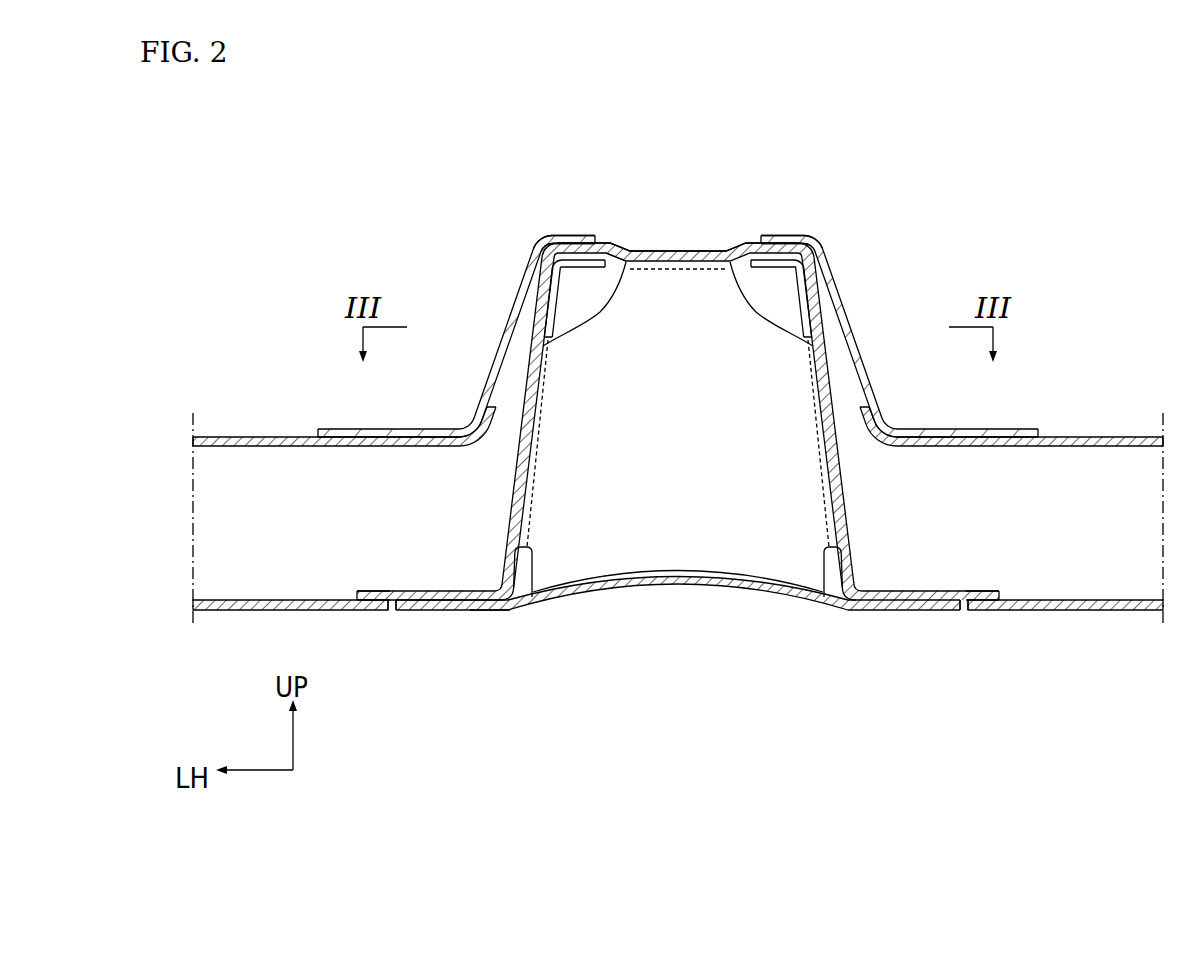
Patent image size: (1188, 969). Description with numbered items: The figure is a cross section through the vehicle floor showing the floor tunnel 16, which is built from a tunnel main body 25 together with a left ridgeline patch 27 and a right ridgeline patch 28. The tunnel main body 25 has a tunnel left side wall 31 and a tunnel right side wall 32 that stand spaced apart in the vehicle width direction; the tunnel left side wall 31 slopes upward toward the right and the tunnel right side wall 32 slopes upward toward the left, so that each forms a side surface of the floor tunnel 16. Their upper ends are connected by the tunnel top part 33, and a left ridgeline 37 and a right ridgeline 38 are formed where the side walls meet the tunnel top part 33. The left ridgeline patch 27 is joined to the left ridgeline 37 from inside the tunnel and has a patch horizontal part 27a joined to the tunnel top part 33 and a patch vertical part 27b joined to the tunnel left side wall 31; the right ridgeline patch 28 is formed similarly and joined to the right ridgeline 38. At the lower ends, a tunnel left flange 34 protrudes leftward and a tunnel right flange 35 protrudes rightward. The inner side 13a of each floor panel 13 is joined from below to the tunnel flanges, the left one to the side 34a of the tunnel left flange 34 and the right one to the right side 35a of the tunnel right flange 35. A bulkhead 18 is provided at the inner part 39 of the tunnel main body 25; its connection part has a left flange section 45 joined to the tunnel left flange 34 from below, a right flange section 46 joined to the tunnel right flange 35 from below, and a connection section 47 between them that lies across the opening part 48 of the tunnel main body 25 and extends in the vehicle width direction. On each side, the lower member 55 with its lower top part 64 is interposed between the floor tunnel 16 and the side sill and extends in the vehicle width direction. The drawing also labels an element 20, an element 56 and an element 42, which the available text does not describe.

The floor tunnel 16 is at (718, 209).
The tunnel main body 25 is at (667, 240).
The tunnel top part 33 is at (630, 256).
The left ridgeline 37 is at (537, 246).
The right ridgeline 38 is at (818, 245).
The side panel assembly 20 is at (678, 318).
The lower member 55 is at (678, 341).
The side wall panel 56 is at (678, 315).
The lower top part 64 is at (270, 435).
The left ridgeline patch 27 is at (614, 333).
The patch horizontal part 27a is at (580, 268).
The patch vertical part 27b is at (557, 298).
The right ridgeline patch 28 is at (789, 266).
The inner part 39 is at (694, 474).
The inner wall 42 is at (768, 458).
The tunnel left side wall 31 is at (513, 495).
The tunnel right side wall 32 is at (845, 507).
The tunnel left flange 34 is at (429, 564).
The left flange overlap 34a is at (367, 564).
The tunnel right flange 35 is at (958, 565).
The right side of tunnel right flange 35a is at (988, 591).
The floor panel 13 is at (262, 600).
The inner side 13a is at (371, 611).
The bulkhead 18 is at (678, 627).
The connection section 47 is at (730, 591).
The left flange section 45 is at (489, 611).
The right flange section 46 is at (935, 611).
The opening part 48 is at (513, 595).